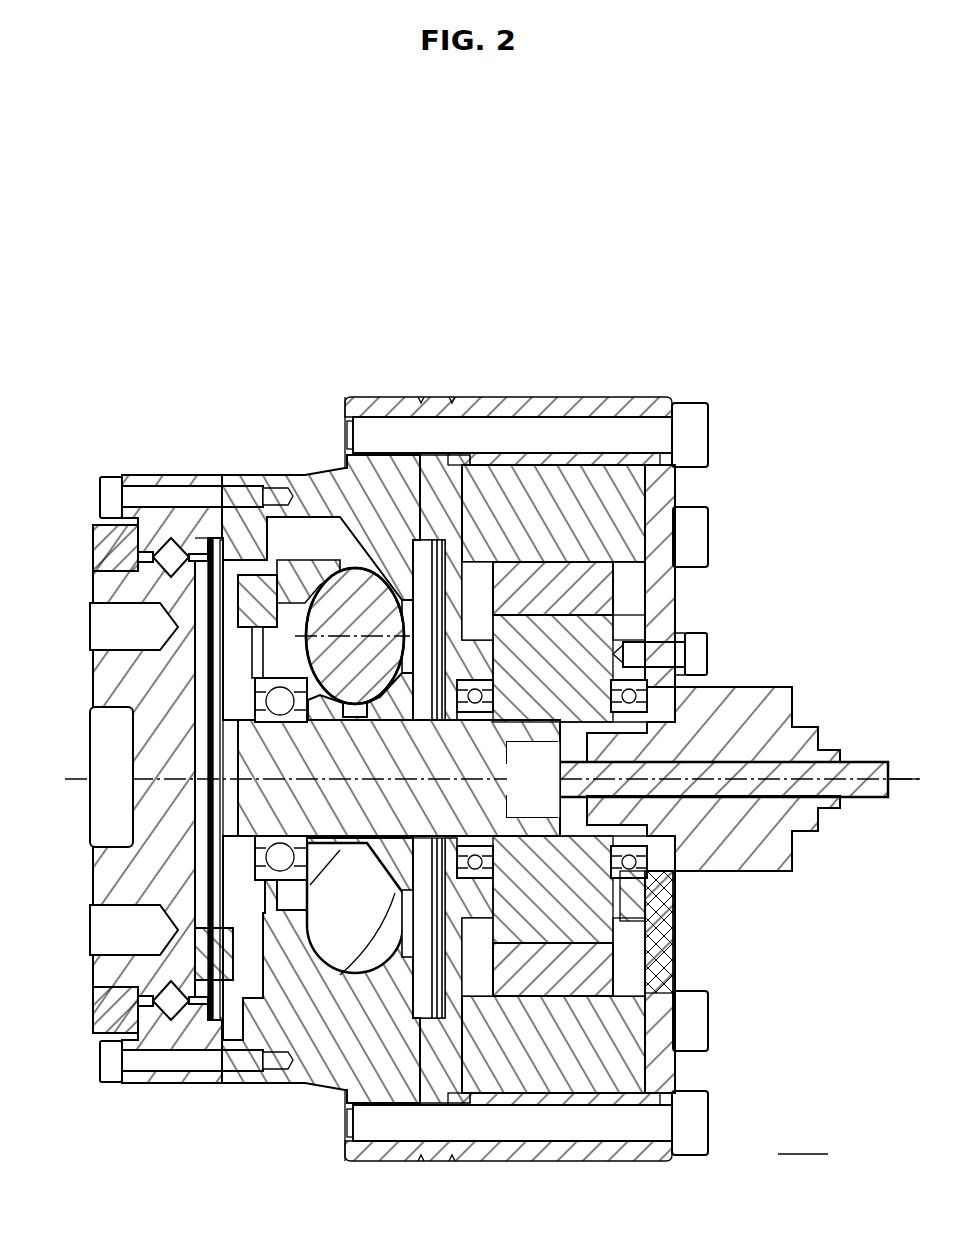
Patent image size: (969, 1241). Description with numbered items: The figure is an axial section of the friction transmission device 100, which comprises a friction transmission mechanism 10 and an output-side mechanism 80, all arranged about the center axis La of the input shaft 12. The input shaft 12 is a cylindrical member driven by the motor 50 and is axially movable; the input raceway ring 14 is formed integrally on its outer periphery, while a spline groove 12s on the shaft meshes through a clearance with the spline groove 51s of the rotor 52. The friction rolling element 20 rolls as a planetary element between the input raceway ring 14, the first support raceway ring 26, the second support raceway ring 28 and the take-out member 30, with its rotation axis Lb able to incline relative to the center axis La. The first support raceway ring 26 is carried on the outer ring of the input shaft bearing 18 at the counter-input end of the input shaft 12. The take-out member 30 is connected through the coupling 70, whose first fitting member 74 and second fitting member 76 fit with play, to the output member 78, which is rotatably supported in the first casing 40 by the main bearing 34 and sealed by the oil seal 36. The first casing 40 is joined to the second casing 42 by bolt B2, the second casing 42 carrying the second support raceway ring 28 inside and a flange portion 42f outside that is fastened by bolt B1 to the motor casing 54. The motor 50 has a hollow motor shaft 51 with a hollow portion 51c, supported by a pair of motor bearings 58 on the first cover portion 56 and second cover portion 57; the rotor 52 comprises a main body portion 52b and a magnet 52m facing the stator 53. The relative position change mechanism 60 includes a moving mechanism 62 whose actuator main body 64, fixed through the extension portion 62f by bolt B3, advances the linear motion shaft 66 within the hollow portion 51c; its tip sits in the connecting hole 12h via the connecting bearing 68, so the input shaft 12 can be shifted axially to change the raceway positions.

The friction transmission device 100 is at (816, 334).
The friction transmission mechanism 10 is at (302, 405).
The input shaft 12 is at (257, 758).
The connecting hole 12h is at (478, 560).
The spline groove 12s is at (420, 555).
The input raceway ring 14 is at (518, 1140).
The input shaft bearing 18 is at (105, 622).
The friction rolling element 20 is at (340, 620).
The first support raceway ring 26 is at (235, 1090).
The second support raceway ring 28 is at (400, 1112).
The take-out member 30 is at (320, 985).
The main bearing 34 is at (155, 563).
The oil seal 36 is at (95, 545).
The first casing 40 is at (145, 487).
The second casing 42 is at (330, 535).
The flange portion 42f is at (392, 405).
The motor 50 is at (578, 370).
The motor shaft 51 is at (700, 690).
The hollow portion 51c is at (670, 895).
The spline groove 51s is at (670, 925).
The rotor 52 is at (603, 582).
The main body portion 52b is at (625, 612).
The magnet 52m is at (640, 567).
The stator 53 is at (620, 530).
The motor casing 54 is at (625, 400).
The first cover portion 56 is at (432, 405).
The second cover portion 57 is at (660, 500).
The motor bearings 58 is at (680, 875).
The relative position change mechanism 60 is at (810, 845).
The moving mechanism 62 is at (784, 905).
The extension portion 62f is at (692, 652).
The actuator main body 64 is at (770, 712).
The linear motion shaft 66 is at (855, 767).
The connecting bearing 68 is at (520, 695).
The coupling 70 is at (205, 530).
The first fitting member 74 is at (222, 565).
The second fitting member 76 is at (120, 1008).
The output member 78 is at (110, 875).
The output-side mechanism 80 is at (248, 462).
The bolt B1 is at (695, 440).
The bolt B2 is at (100, 492).
The bolt B3 is at (628, 650).
The center axis La is at (912, 793).
The rotation axis Lb is at (325, 630).